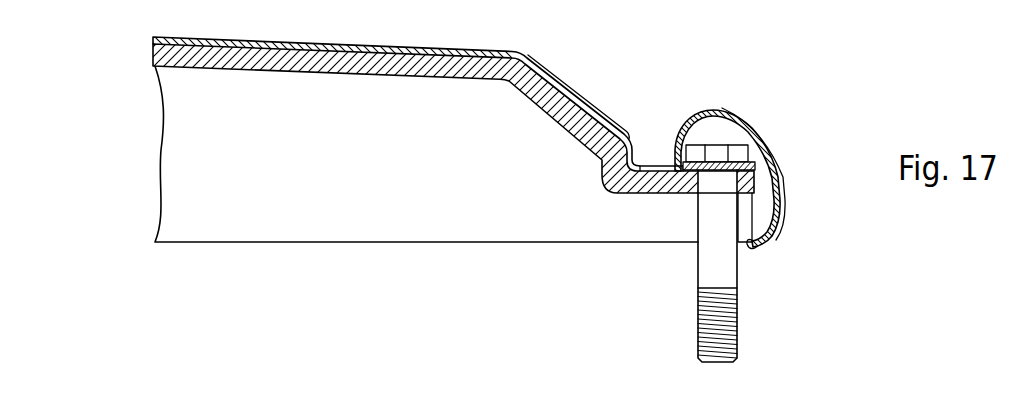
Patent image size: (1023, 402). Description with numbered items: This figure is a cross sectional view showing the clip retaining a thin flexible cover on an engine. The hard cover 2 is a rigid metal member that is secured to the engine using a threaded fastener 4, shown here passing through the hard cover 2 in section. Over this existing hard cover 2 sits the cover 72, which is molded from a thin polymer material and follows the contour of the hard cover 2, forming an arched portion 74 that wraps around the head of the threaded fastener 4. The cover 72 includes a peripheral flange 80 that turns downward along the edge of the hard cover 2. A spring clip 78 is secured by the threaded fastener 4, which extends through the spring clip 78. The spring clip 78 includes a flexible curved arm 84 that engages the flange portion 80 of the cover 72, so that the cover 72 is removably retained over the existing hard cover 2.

The hard cover 2 is at (207, 67).
The threaded fastener 4 is at (697, 262).
The cover 72 is at (533, 57).
The arched cap portion 74 is at (748, 122).
The spring clip 78 is at (757, 247).
The peripheral flange 80 is at (777, 171).
The flexible curved arm 84 is at (745, 243).